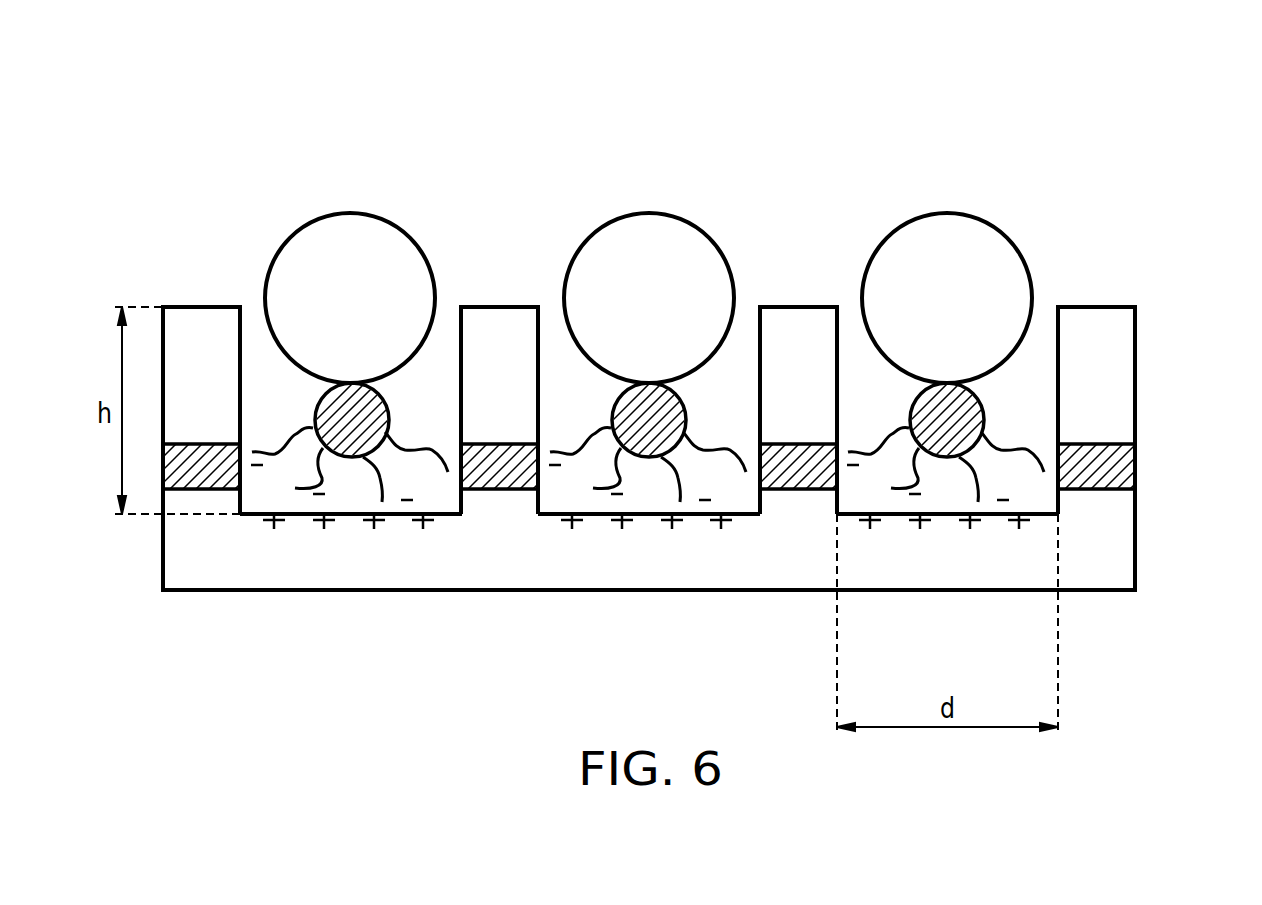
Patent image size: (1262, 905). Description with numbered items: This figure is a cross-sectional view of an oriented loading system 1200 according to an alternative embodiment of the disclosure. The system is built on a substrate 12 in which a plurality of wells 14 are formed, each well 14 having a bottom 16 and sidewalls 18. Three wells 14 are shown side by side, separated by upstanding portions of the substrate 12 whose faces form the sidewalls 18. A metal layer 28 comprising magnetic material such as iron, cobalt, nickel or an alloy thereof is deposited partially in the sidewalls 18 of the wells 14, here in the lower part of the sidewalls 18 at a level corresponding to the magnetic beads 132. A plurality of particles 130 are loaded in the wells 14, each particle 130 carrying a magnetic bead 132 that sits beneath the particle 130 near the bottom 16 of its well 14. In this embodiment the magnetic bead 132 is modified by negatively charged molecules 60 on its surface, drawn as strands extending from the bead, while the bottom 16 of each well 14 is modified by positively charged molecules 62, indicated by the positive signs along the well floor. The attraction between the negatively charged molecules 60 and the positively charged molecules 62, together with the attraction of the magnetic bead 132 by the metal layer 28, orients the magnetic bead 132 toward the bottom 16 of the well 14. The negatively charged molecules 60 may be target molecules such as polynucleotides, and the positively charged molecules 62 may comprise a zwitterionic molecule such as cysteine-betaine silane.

The substrate 12 is at (1122, 565).
The well 14 is at (257, 510).
The bottom 16 is at (1039, 502).
The sidewalls 18 is at (840, 341).
The metal layer 28 is at (200, 450).
The negatively charged molecules 60 is at (1026, 449).
The positively charged molecules 62 is at (970, 522).
The particle 130 is at (355, 196).
The magnetic bead 132 is at (350, 443).
The structure 1200 is at (1241, 148).